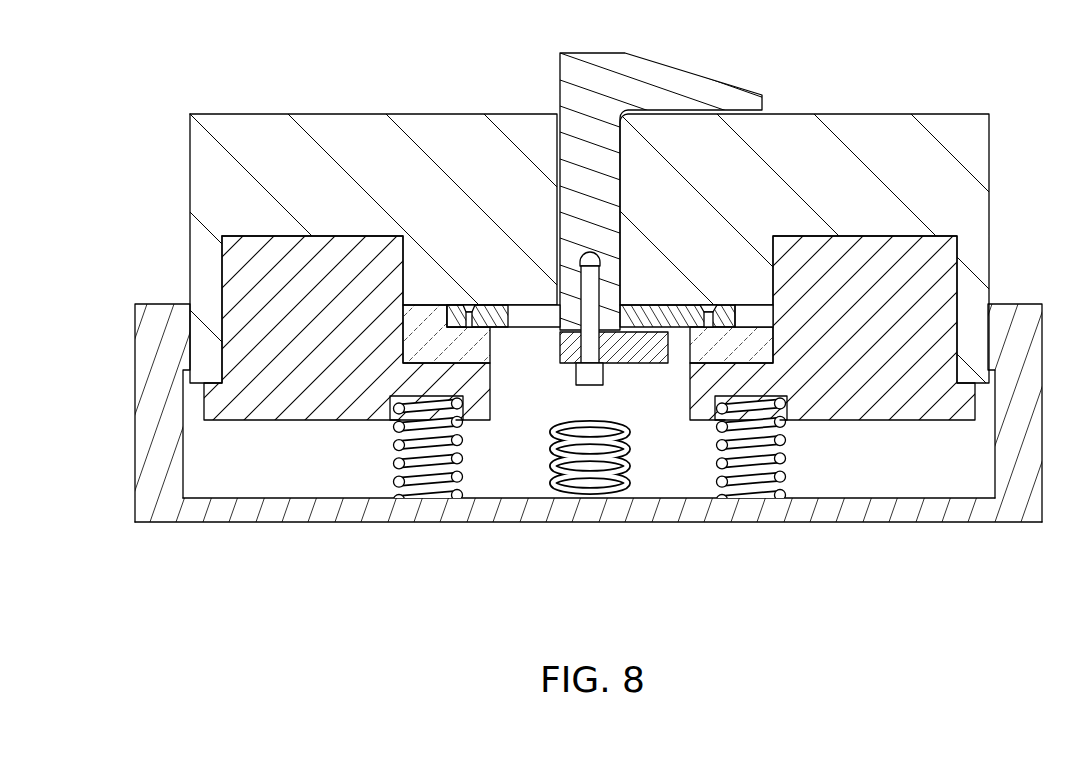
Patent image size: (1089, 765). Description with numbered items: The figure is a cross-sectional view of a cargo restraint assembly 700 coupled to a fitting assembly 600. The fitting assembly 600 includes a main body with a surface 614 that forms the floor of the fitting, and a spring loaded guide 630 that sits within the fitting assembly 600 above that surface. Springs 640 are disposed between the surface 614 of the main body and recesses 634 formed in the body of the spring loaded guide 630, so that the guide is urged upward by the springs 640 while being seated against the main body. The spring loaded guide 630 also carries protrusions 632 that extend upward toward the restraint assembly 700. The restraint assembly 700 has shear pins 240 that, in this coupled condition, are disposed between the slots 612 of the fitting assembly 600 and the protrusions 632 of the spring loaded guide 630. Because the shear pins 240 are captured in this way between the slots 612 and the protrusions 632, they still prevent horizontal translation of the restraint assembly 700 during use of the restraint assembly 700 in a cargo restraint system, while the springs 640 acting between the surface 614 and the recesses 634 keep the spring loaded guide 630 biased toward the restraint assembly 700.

The restraint assembly 700 is at (544, 300).
The shear pins 240 is at (208, 304).
The protrusions 632 is at (290, 250).
The spring loaded guide 630 is at (544, 302).
The slots 612 is at (190, 342).
The fitting assembly 600 is at (565, 398).
The surface 614 is at (208, 498).
The recesses 634 is at (457, 418).
The springs 640 is at (425, 462).